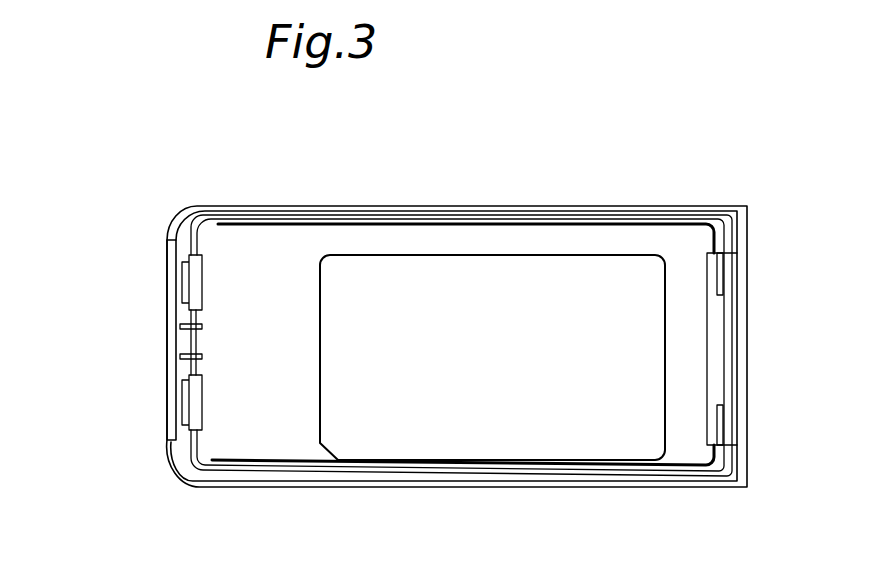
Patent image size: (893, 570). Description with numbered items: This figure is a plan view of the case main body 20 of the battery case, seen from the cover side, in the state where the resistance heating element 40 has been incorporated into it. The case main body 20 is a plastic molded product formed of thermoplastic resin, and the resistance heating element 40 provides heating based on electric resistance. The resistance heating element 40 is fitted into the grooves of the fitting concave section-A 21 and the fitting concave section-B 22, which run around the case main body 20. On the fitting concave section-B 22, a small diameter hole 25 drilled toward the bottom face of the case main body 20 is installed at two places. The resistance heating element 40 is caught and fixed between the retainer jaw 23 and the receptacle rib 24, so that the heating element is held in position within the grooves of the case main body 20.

The case main body 20 is at (471, 206).
The fitting concave section-A 21 is at (678, 219).
The fitting concave section-B 22 is at (721, 347).
The retainer jaw 23 is at (192, 283).
The receptacle rib 24 is at (182, 356).
The small diameter hole 25 is at (713, 265).
The resistance heating element 40 is at (207, 215).